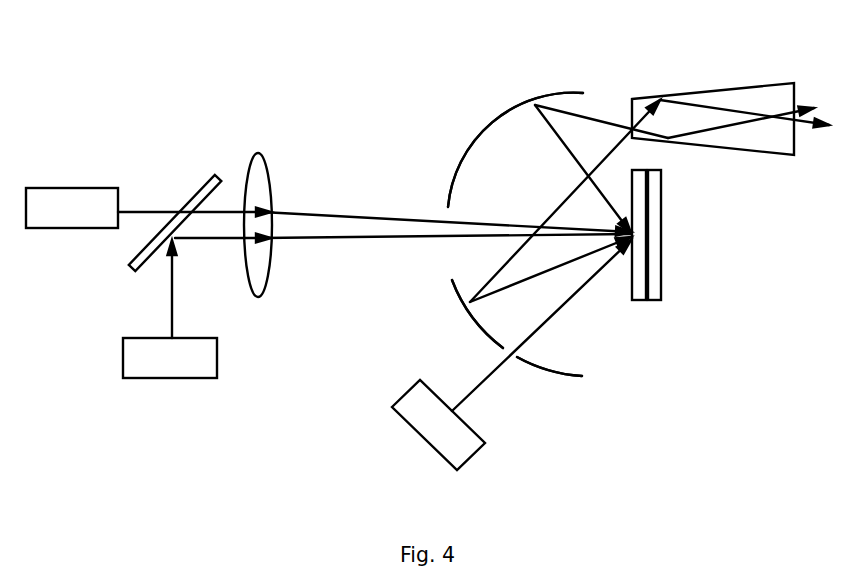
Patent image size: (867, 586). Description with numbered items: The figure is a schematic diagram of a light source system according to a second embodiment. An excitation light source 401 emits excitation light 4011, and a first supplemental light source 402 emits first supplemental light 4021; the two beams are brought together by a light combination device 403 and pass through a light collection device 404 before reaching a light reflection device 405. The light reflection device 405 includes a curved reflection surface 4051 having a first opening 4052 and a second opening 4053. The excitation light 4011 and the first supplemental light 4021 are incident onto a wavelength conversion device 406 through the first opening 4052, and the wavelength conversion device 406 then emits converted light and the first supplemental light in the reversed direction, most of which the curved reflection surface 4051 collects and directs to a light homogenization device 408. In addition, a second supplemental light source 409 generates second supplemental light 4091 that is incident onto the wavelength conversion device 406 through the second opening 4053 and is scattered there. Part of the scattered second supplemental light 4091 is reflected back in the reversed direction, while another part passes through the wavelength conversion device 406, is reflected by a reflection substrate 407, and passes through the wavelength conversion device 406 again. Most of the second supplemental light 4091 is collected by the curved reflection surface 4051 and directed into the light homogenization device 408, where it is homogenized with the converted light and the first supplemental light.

The excitation light source 401 is at (80, 188).
The excitation light 4011 is at (140, 211).
The first supplemental light source 402 is at (167, 378).
The first supplemental light 4021 is at (172, 292).
The light combination device 403 is at (219, 172).
The light collection device 404 is at (258, 158).
The light reflection device 405 is at (458, 135).
The curved reflection surface 4051 is at (533, 103).
The first opening 4052 is at (450, 262).
The second opening 4053 is at (503, 347).
The wavelength conversion device 406 is at (638, 288).
The reflection substrate 407 is at (660, 300).
The light homogenization device 408 is at (735, 100).
The second supplemental light source 409 is at (437, 445).
The second supplemental light 4091 is at (507, 360).